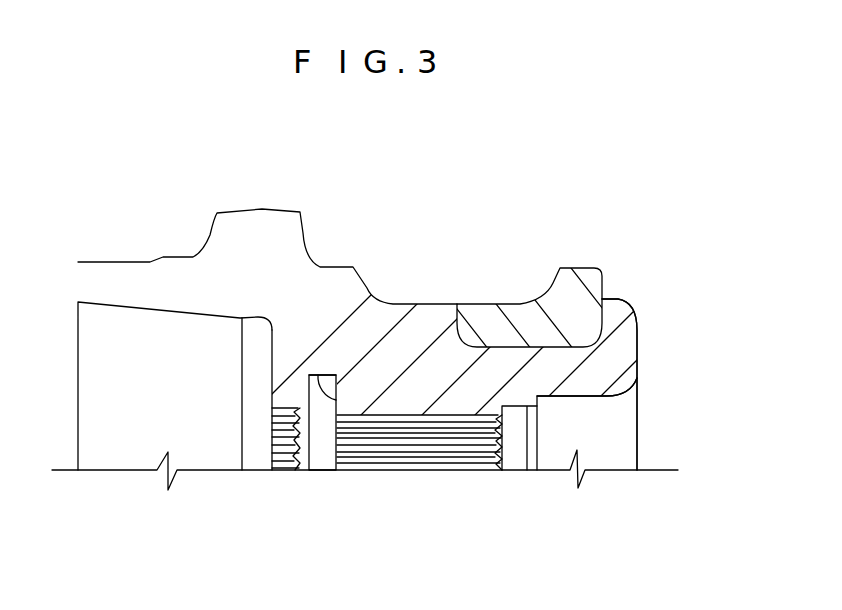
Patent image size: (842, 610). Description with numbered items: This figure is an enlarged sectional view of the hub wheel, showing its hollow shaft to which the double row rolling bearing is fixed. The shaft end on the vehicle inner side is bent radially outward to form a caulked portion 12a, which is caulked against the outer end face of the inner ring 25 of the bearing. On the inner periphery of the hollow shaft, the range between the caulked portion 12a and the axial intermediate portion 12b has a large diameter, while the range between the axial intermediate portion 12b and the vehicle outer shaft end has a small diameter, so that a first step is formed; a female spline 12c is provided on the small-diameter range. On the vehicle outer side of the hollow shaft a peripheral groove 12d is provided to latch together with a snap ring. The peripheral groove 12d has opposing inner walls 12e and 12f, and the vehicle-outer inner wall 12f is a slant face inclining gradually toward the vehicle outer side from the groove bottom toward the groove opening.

The inner ring 25 is at (583, 272).
The caulked portion 12a is at (628, 308).
The axial intermediate portion 12b is at (540, 393).
The female spline 12c is at (450, 453).
The peripheral groove 12d is at (323, 452).
The inner wall 12e is at (325, 375).
The inner wall 12f is at (300, 403).